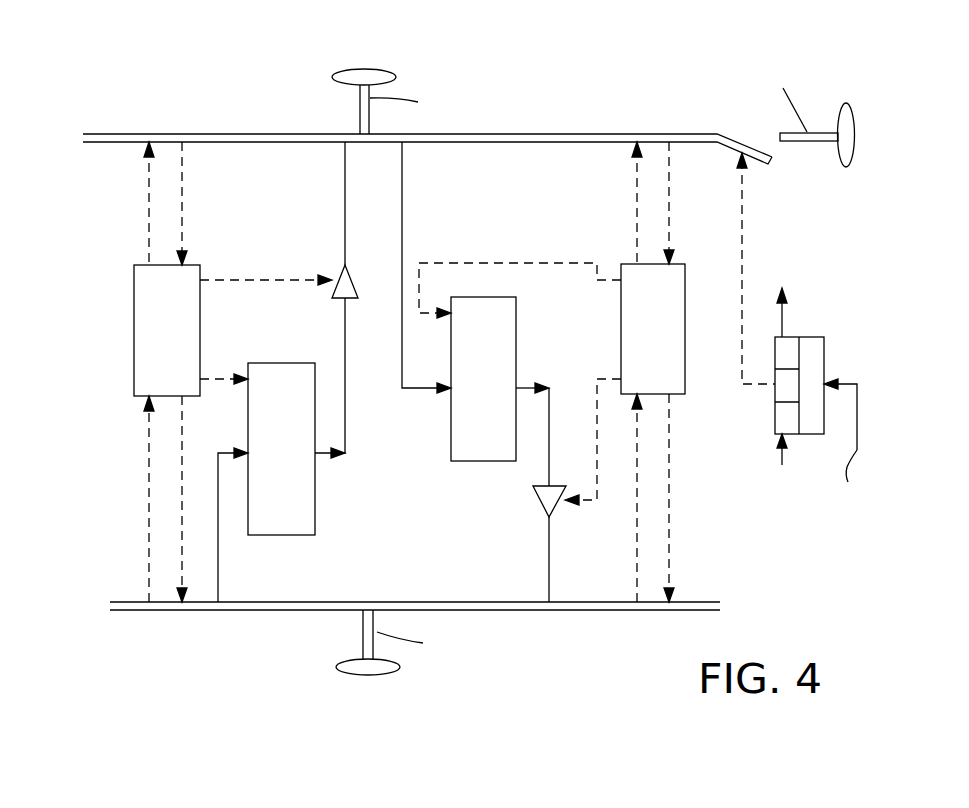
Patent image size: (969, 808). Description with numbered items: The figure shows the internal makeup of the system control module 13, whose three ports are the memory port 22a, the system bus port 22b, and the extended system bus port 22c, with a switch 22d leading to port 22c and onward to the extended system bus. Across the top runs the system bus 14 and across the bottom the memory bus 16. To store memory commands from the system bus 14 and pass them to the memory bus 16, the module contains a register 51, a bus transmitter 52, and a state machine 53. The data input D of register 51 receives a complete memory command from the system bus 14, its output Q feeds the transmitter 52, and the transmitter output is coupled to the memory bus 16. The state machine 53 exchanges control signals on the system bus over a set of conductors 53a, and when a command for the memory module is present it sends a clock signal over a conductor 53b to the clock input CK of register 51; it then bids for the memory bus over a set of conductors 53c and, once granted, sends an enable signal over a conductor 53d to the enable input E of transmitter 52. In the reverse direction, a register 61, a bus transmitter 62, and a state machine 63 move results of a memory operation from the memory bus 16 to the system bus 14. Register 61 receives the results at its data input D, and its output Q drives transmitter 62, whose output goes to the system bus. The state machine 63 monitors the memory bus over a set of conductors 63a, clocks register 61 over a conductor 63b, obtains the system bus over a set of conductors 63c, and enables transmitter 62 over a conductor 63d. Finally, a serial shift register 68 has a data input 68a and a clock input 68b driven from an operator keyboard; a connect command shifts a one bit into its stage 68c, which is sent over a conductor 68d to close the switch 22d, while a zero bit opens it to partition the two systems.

The system control module 13 is at (600, 89).
The system bus 14 is at (360, 115).
The memory bus 16 is at (352, 610).
The memory port 22a is at (380, 675).
The system bus port 22b is at (372, 69).
The extended system bus port 22c is at (847, 167).
The switch 22d is at (740, 140).
The register 51 is at (452, 433).
The bus transmitter 52 is at (541, 500).
The state machine 53 is at (620, 317).
The set of conductors 53a is at (668, 181).
The conductor 53b is at (480, 262).
The set of conductors 53c is at (642, 527).
The conductor 53d is at (597, 398).
The register 61 is at (313, 507).
The bus transmitter 62 is at (353, 280).
The state machine 63 is at (135, 317).
The set of conductors 63a is at (183, 465).
The conductor 63b is at (217, 380).
The set of conductors 63c is at (178, 185).
The conductor 63d is at (253, 280).
The serial shift register 68 is at (838, 342).
The data input 68a is at (782, 458).
The clock input 68b is at (855, 446).
The stage 68c is at (782, 392).
The conductor 68d is at (743, 285).